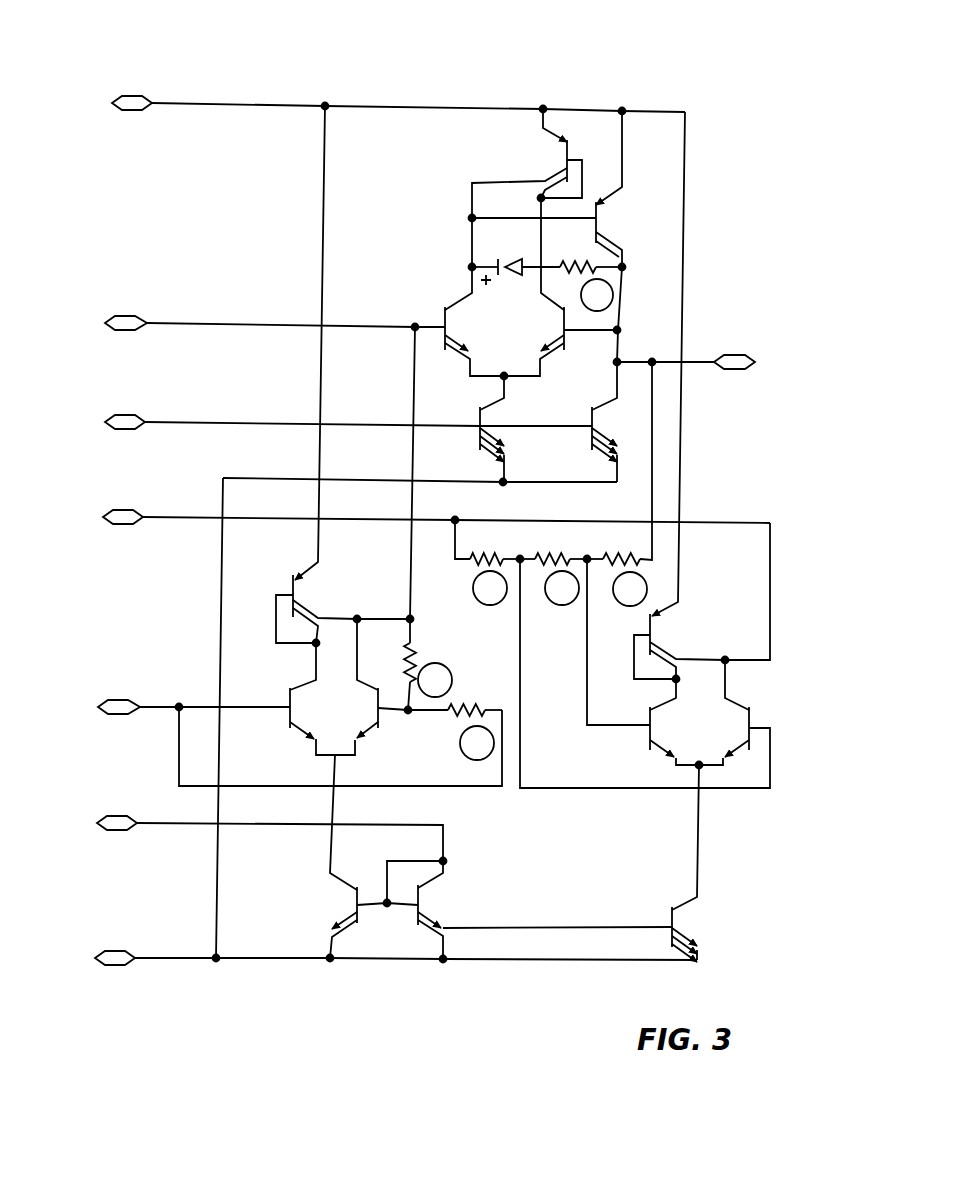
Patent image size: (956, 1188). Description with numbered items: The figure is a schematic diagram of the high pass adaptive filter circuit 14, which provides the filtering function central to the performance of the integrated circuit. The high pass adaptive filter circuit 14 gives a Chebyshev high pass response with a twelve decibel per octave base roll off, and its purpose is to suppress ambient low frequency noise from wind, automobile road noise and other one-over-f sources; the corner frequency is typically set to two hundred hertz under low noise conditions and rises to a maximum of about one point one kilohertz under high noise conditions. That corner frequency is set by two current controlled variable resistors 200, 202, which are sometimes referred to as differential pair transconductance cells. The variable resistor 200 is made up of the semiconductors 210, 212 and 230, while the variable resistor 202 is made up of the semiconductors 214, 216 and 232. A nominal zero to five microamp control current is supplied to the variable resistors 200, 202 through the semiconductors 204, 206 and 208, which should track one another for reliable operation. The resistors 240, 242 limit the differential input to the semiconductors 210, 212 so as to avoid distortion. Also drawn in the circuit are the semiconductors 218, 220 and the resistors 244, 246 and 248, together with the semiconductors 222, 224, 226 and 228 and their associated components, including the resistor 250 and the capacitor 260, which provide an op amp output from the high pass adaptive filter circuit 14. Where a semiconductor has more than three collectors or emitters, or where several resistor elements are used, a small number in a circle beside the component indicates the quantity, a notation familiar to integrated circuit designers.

The high pass adaptive filter circuit 14 is at (432, 498).
The current controlled variable resistor 200 is at (344, 710).
The current controlled variable resistor 202 is at (645, 673).
The semiconductor 204 is at (342, 856).
The semiconductor 206 is at (404, 891).
The semiconductor 208 is at (662, 863).
The semiconductor 210 is at (267, 700).
The semiconductor 212 is at (394, 690).
The semiconductor 214 is at (655, 724).
The semiconductor 216 is at (702, 397).
The semiconductor 218 is at (518, 429).
The semiconductor 220 is at (578, 374).
The semiconductor 222 is at (445, 323).
The semiconductor 224 is at (552, 287).
The semiconductor 226 is at (527, 188).
The semiconductor 228 is at (572, 191).
The semiconductor 230 is at (321, 376).
The semiconductor 232 is at (750, 708).
The resistor 240 is at (434, 663).
The resistor 242 is at (453, 743).
The resistor 244 is at (488, 561).
The resistor 246 is at (555, 563).
The resistor 248 is at (619, 484).
The resistor 250 is at (614, 278).
The capacitor 260 is at (487, 253).